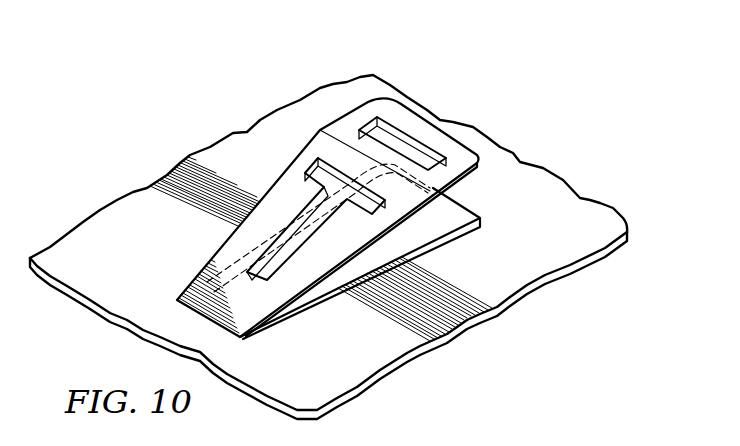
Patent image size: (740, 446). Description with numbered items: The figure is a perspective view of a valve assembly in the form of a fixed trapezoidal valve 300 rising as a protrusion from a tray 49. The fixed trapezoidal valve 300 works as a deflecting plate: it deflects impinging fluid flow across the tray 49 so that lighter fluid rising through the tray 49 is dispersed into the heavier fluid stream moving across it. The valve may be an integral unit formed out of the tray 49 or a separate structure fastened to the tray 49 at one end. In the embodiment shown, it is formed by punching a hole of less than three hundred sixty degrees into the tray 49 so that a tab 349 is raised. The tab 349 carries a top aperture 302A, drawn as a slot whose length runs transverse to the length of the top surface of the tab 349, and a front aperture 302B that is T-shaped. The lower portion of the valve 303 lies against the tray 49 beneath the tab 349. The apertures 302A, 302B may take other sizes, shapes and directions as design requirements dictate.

The tray 49 is at (585, 211).
The fixed trapezoidal valve 300 is at (356, 186).
The tab 349 is at (457, 154).
The lower leaf of wedge 303 is at (433, 223).
The top aperture 302A is at (397, 143).
The front aperture 302B is at (322, 218).